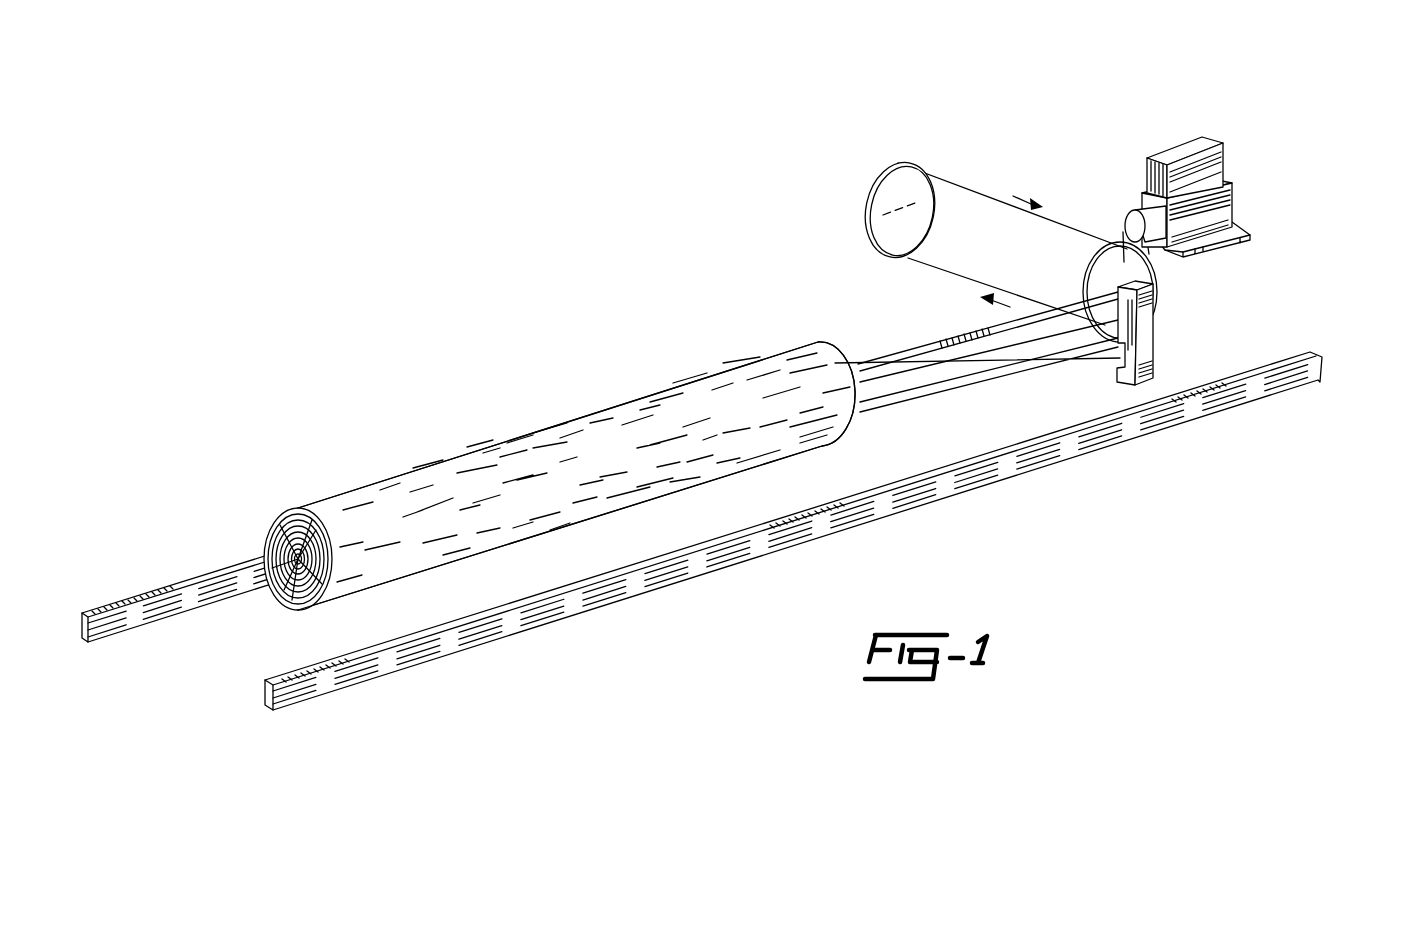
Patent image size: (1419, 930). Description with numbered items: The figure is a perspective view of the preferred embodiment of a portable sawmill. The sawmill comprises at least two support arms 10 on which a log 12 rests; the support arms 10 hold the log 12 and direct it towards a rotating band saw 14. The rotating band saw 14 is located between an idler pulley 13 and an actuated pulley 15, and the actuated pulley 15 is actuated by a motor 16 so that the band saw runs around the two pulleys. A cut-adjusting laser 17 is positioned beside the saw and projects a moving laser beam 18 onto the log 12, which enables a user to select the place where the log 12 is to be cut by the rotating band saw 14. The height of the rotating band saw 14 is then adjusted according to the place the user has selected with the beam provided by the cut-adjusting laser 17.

The support arms 10 is at (233, 738).
The log 12 is at (668, 388).
The idler pulley 13 is at (877, 240).
The rotating band saw 14 is at (978, 186).
The actuated pulley 15 is at (1083, 260).
The motor 16 is at (1227, 147).
The cut-adjusting laser 17 is at (1152, 364).
The moving laser beam 18 is at (937, 396).